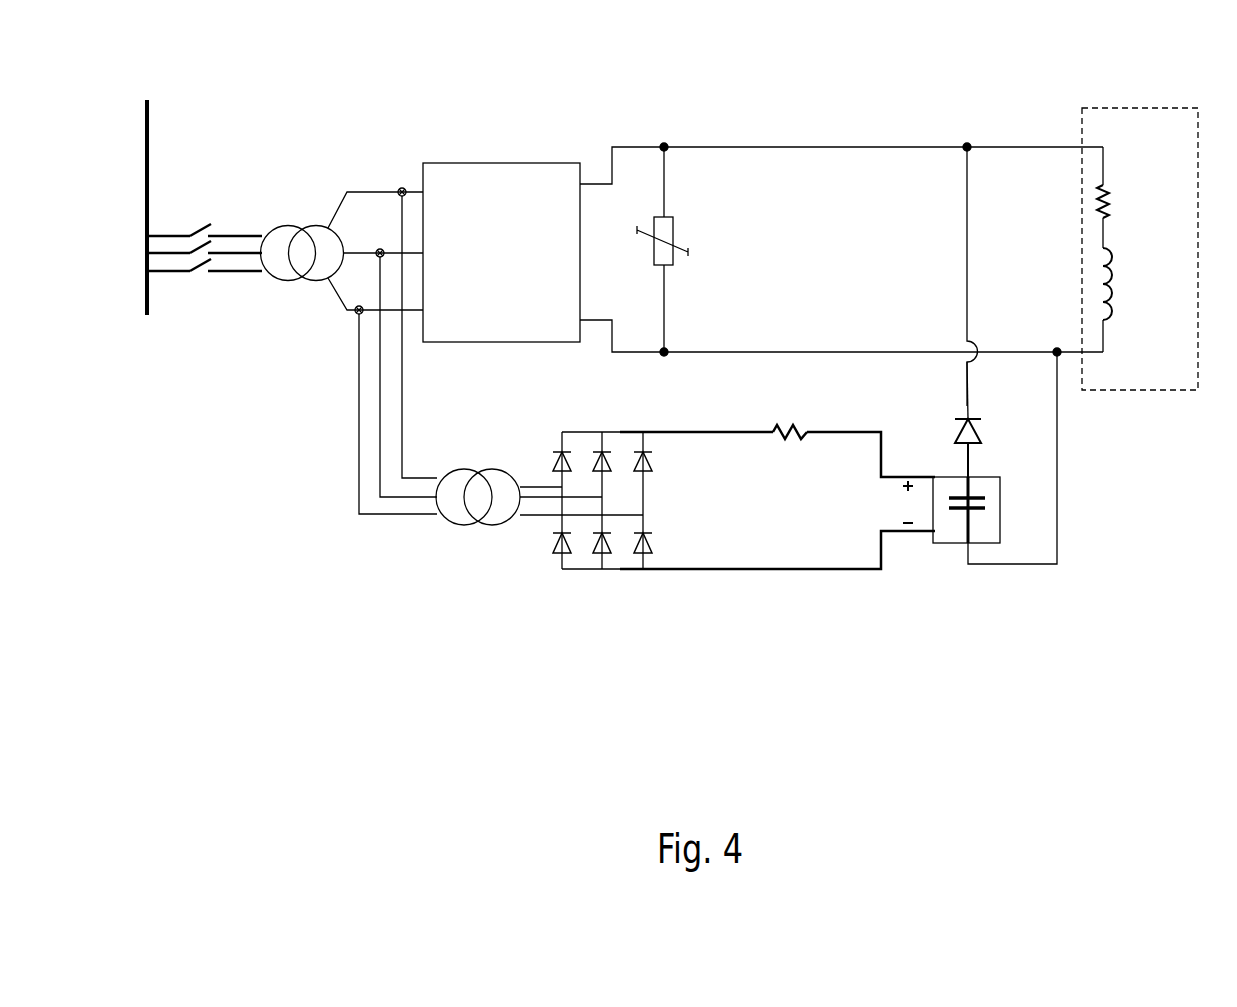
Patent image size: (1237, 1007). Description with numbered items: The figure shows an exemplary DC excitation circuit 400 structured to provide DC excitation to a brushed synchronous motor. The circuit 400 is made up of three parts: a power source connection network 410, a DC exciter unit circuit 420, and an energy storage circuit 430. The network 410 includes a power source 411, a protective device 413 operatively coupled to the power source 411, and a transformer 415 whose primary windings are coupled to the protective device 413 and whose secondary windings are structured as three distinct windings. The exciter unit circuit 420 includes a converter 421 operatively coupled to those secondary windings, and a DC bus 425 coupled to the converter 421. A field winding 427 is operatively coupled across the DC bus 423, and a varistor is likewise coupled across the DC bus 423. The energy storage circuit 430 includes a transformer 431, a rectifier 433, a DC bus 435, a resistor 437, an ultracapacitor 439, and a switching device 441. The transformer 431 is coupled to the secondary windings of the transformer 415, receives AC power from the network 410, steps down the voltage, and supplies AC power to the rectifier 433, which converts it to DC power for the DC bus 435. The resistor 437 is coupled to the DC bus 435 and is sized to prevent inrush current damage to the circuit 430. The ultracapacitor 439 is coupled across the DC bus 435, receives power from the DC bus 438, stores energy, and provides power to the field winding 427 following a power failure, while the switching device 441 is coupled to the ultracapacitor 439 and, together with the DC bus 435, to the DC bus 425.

The DC excitation circuit 400 is at (1128, 592).
The power source connection network 410 is at (216, 334).
The power source 411 is at (150, 123).
The protective device 413 is at (191, 230).
The transformer 415 is at (293, 226).
The DC exciter unit circuit 420 is at (430, 118).
The converter 421 is at (488, 162).
The DC bus 423 is at (695, 150).
The DC bus 425 is at (673, 240).
The field winding 427 is at (1082, 110).
The energy storage circuit 430 is at (558, 600).
The transformer 431 is at (470, 468).
The rectifier 433 is at (607, 426).
The DC bus 435 is at (700, 432).
The resistor 437 is at (790, 432).
The DC bus 438 is at (912, 532).
The ultracapacitor 439 is at (1002, 515).
The switching device 441 is at (977, 430).